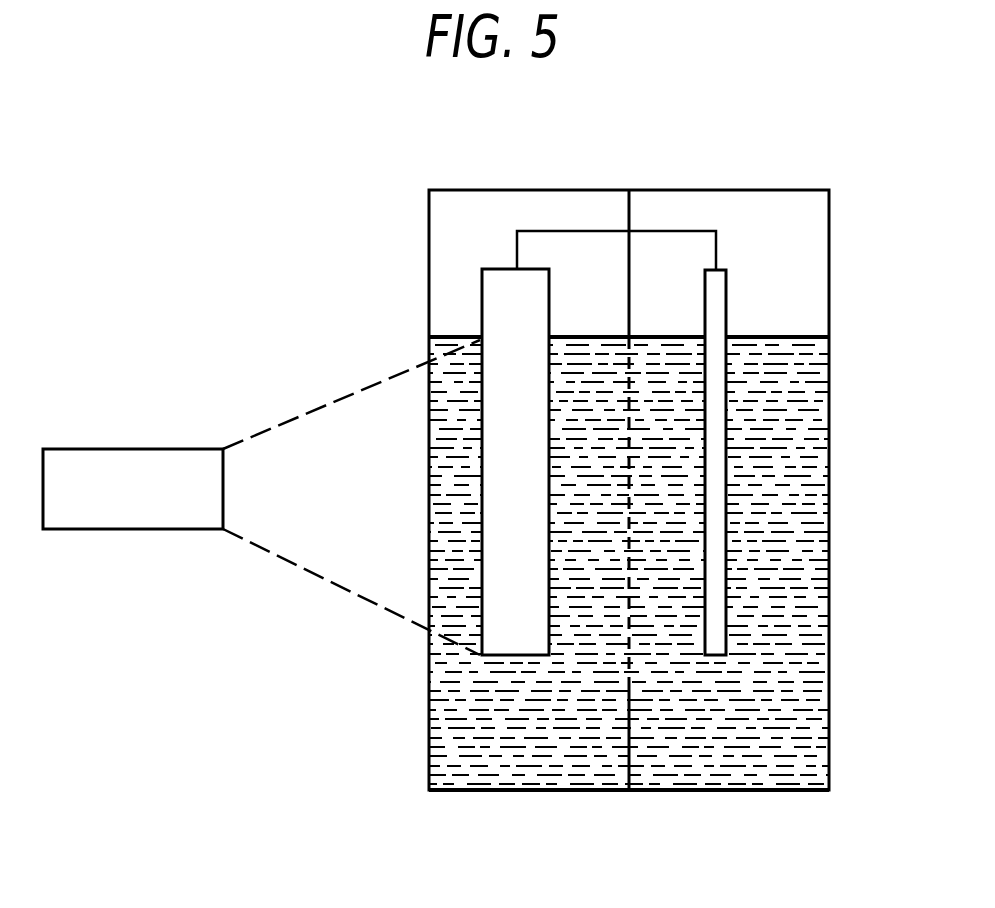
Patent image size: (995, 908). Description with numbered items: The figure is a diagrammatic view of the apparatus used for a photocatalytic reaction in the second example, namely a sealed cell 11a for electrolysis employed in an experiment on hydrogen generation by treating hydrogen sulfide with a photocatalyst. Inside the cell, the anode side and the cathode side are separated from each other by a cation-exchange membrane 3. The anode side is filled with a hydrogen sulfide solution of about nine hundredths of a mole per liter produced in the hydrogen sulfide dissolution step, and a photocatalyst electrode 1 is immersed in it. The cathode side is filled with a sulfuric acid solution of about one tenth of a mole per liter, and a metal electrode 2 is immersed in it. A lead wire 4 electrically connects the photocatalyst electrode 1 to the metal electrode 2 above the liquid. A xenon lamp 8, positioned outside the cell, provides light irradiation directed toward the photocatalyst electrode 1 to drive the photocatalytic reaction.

The photocatalyst electrode 1 is at (517, 655).
The metal electrode 2 is at (726, 553).
The cation-exchange membrane 3 is at (629, 643).
The lead wire 4 is at (716, 247).
The xenon lamp 8 is at (134, 449).
The sealed cell for electrolysis 11a is at (428, 740).